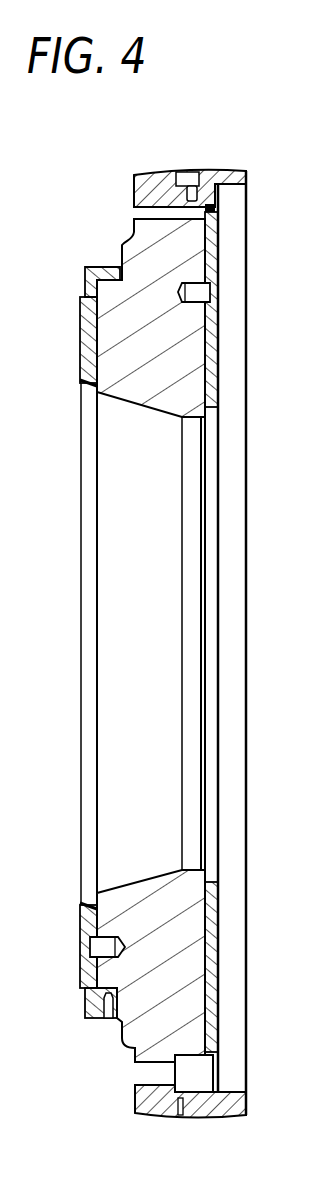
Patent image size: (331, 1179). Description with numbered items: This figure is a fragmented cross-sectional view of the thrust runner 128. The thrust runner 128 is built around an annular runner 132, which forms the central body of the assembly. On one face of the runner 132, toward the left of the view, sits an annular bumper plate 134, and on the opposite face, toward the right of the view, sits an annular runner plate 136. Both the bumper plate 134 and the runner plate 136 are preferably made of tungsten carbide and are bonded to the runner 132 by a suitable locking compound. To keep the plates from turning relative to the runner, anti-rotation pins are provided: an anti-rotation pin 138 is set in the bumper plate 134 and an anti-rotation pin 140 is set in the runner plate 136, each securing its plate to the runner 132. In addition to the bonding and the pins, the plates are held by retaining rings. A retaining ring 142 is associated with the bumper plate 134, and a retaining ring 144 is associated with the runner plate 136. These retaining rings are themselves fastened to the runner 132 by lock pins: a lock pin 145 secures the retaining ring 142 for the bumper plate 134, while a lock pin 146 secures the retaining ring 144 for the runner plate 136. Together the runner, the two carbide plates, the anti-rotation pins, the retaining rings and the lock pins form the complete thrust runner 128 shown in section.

The thrust runner 128 is at (218, 171).
The annular runner 132 is at (122, 243).
The annular bumper plate 134 is at (80, 360).
The annular runner plate 136 is at (210, 370).
The anti-rotation pin 138 is at (202, 291).
The anti-rotation pin 140 is at (90, 947).
The retaining ring 142 is at (85, 280).
The retaining ring 144 is at (217, 1118).
The lock pin 145 is at (105, 1020).
The lock pin 146 is at (192, 182).